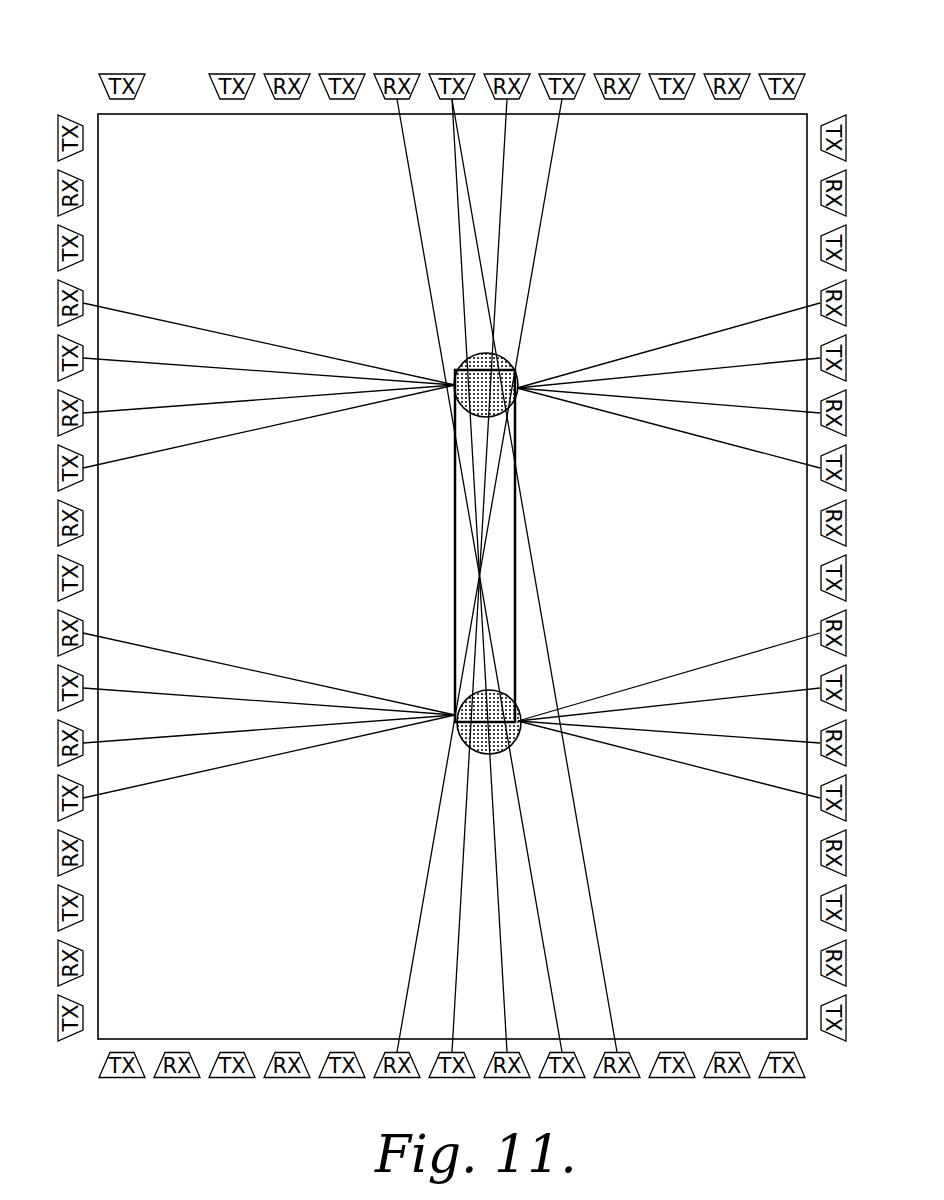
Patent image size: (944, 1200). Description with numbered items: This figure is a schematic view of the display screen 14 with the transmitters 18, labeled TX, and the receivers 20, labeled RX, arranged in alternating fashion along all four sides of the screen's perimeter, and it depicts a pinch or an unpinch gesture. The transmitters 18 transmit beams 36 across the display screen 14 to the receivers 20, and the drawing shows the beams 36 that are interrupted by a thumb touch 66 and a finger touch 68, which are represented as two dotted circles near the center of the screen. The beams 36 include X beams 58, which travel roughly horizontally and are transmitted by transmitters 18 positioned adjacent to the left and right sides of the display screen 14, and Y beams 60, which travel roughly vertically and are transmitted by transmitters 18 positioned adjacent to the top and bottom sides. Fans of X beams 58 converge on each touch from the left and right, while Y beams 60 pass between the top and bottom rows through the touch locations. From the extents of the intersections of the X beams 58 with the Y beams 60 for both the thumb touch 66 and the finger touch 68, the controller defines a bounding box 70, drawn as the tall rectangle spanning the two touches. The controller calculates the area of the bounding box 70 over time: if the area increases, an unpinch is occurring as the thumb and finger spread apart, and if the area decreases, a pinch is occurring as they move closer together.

The display screen 14 is at (227, 947).
The transmitters 18 is at (236, 66).
The receivers 20 is at (398, 66).
The beams 36 is at (712, 784).
The X beams 58 is at (162, 318).
The Y beams 60 is at (417, 232).
The thumb touch 66 is at (512, 748).
The finger touch 68 is at (504, 354).
The bounding box 70 is at (455, 558).